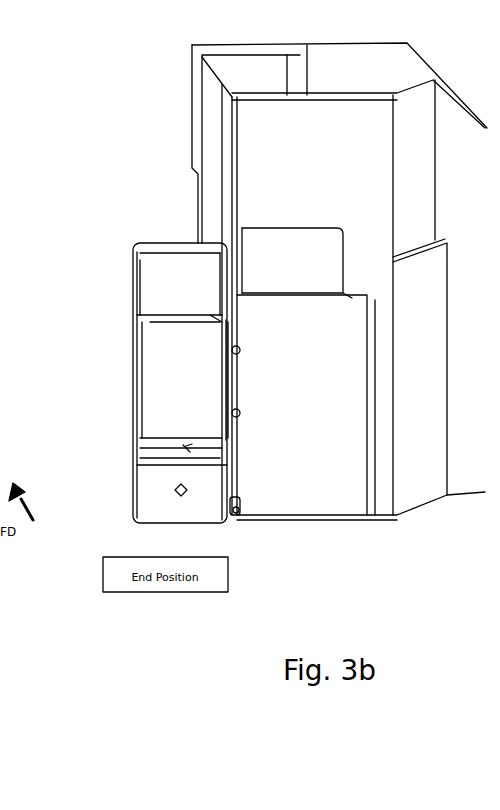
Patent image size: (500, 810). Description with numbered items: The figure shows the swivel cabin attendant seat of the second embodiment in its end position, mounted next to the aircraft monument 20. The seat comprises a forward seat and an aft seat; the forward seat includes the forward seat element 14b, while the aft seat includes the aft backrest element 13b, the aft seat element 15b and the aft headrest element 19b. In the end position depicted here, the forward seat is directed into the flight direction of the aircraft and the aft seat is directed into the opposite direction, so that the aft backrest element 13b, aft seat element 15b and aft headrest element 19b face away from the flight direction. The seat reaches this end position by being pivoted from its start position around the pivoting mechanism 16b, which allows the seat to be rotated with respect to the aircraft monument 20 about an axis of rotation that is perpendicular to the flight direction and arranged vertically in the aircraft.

The aircraft monument 20 is at (202, 115).
The forward seat element 14b is at (131, 418).
The aft headrest element 19b is at (162, 292).
The aft backrest element 13b is at (163, 352).
The aft seat element 15b is at (168, 450).
The pivoting mechanism 16b is at (238, 497).